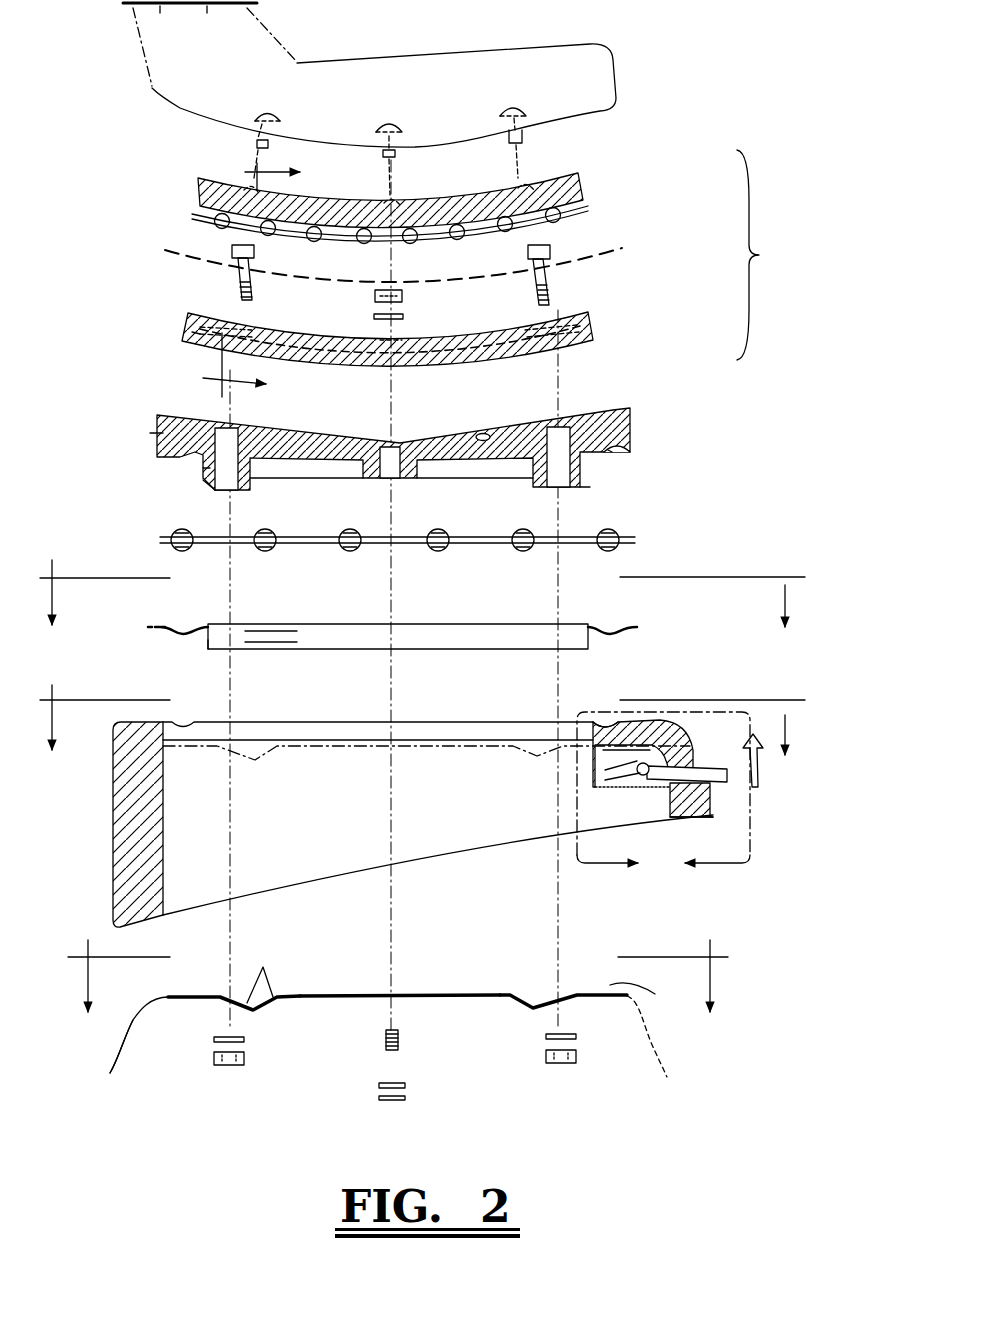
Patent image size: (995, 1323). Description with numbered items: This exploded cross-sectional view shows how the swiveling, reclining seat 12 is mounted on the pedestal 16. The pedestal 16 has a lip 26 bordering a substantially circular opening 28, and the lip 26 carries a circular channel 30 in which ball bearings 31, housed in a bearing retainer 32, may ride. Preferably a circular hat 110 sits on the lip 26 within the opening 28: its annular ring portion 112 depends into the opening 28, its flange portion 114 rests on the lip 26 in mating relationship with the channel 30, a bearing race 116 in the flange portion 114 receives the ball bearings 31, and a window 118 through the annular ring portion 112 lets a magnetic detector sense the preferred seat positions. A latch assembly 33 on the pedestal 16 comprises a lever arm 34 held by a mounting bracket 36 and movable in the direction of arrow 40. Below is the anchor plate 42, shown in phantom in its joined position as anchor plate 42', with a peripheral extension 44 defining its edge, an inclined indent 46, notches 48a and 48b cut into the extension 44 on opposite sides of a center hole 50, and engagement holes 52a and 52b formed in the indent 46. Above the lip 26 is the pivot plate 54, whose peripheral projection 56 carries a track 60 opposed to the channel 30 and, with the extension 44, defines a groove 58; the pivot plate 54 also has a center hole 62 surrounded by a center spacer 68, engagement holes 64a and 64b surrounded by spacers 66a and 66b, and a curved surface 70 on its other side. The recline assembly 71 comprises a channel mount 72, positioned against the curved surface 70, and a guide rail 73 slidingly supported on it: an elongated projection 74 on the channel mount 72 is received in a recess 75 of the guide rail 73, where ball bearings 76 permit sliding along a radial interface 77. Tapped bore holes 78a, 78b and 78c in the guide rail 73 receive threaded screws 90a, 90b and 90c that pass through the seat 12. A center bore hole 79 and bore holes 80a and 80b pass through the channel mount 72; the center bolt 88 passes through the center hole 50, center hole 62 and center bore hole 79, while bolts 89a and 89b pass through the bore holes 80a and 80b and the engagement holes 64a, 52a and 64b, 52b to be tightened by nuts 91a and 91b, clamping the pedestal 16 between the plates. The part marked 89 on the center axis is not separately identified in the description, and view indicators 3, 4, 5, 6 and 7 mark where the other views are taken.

The seat 12 is at (632, 52).
The threaded screw 90a is at (268, 108).
The threaded screw 90b is at (389, 120).
The threaded screw 90c is at (512, 105).
The tapped bore hole 78a is at (250, 185).
The tapped bore hole 78b is at (420, 178).
The tapped bore hole 78c is at (528, 178).
The section line 7 is at (268, 282).
The guide rail 73 is at (600, 190).
The recess 75 is at (233, 224).
The ball bearings 76 is at (272, 233).
The radial interface 77 is at (176, 249).
The recline assembly 71 is at (762, 255).
The bolt 89a is at (235, 270).
The bolt 89b is at (545, 275).
The nut 89 is at (410, 294).
The channel mount 72 is at (600, 330).
The upstanding elongated projection 74 is at (192, 332).
The bore hole 80a is at (220, 352).
The bore hole 80b is at (560, 347).
The center bore hole 79 is at (397, 366).
The pivot plate 54 is at (655, 420).
The engagement hole 64a is at (238, 423).
The engagement hole 64b is at (546, 420).
The center hole 62 is at (385, 445).
The curved surface 70 is at (480, 436).
The center spacer 68 is at (367, 482).
The peripheral projection 56 is at (160, 432).
The groove 58 is at (203, 468).
The track 60 is at (608, 450).
The spacer 66a is at (207, 490).
The spacer 66b is at (600, 495).
The bearing retainer 32 is at (150, 543).
The ball bearings 31 is at (268, 550).
The section line 6 is at (422, 610).
The section line 3 is at (422, 736).
The section line 5 is at (398, 995).
The detail area 4 is at (663, 794).
The circular hat 110 is at (432, 612).
The bearing race 116 is at (183, 630).
The window 118 is at (268, 633).
The flange portion 114 is at (160, 630).
The annular ring portion 112 is at (206, 644).
The pedestal 16 is at (432, 710).
The circular opening 28 is at (325, 735).
The anchor plate (phantom position) 42' is at (426, 721).
The lip 26 is at (212, 718).
The circular channel 30 is at (610, 723).
The mounting bracket 36 is at (620, 790).
The arrow 40 is at (740, 752).
The lever arm 34 is at (712, 826).
The latch assembly 33 is at (720, 838).
The anchor plate 42 is at (368, 995).
The center hole 50 is at (400, 993).
The inclined indent 46 is at (265, 967).
The engagement hole 52a is at (223, 993).
The engagement hole 52b is at (568, 993).
The notch 48a is at (110, 1073).
The notch 48b is at (654, 1048).
The peripheral extension 44 is at (180, 998).
The nut 91a is at (232, 1070).
The center bolt 88 is at (390, 1072).
The nut 91b is at (552, 1082).